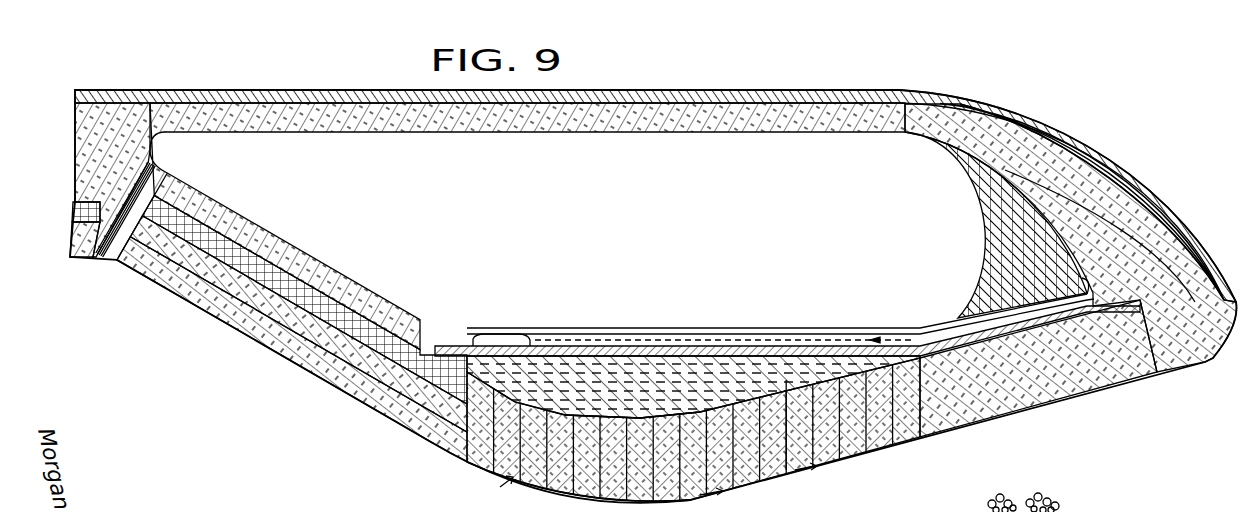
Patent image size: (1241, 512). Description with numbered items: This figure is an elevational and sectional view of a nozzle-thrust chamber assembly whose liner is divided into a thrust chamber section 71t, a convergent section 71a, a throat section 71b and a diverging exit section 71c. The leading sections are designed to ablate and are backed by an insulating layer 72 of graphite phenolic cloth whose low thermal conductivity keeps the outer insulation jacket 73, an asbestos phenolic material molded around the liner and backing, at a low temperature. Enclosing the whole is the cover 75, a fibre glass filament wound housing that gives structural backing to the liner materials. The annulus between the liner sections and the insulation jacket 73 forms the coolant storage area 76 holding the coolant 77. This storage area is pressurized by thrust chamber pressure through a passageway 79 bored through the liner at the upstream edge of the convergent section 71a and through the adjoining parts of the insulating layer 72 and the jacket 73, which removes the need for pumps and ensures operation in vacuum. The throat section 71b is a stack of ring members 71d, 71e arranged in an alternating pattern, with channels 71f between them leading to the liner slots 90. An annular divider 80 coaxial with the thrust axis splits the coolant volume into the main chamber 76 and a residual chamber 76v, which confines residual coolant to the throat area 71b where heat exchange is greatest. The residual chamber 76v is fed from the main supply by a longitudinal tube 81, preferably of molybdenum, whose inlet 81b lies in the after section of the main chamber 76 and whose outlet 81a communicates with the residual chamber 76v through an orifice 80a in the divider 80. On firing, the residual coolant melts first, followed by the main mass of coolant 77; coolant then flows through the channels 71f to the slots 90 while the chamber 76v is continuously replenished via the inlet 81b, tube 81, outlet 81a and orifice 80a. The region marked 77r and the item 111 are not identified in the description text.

The cover 75 is at (112, 93).
The outer insulation jacket 73 is at (76, 112).
The coolant storage area 76 is at (787, 140).
The coolant 77 is at (996, 215).
The inlet 81b is at (1086, 288).
The thrust chamber section 71t is at (72, 244).
The passageway 79 is at (114, 260).
The insulating layer 72 is at (153, 284).
The convergent section 71a is at (213, 312).
The outlet 81a is at (491, 332).
The longitudinal tube 81 is at (542, 330).
The residual chamber 76v is at (470, 370).
The orifice 80a is at (787, 343).
The annular divider 80 is at (693, 387).
The rear portion 77r is at (692, 412).
The ring member 71d is at (698, 412).
The ring member 71e is at (818, 375).
The liner slots 90 is at (901, 443).
The channels 71f is at (751, 482).
The diverging exit section 71c is at (1043, 402).
The debris 111 is at (1066, 505).
The throat section 71b is at (626, 494).